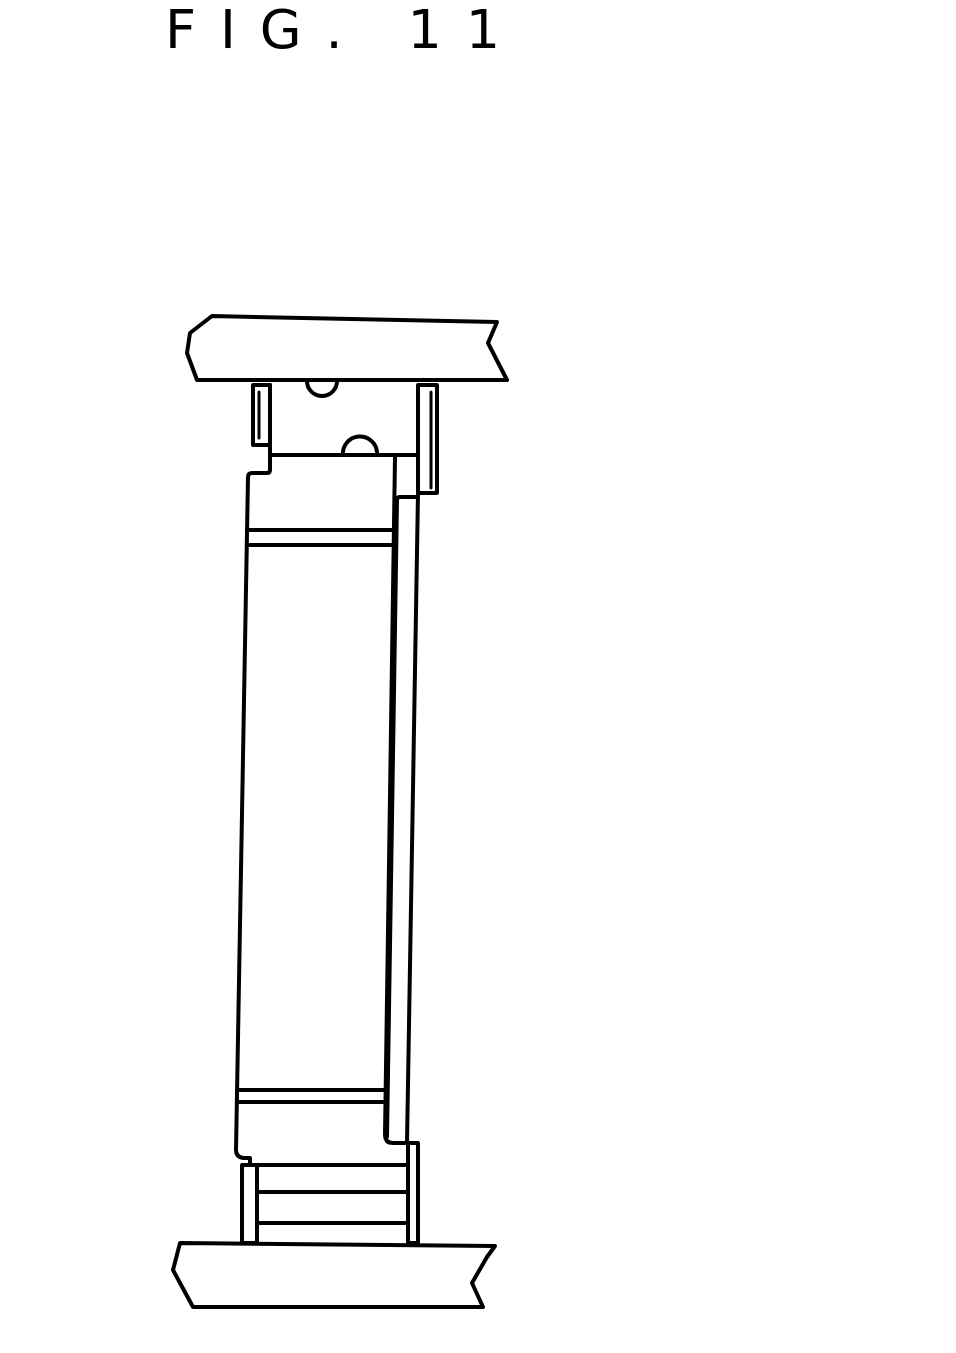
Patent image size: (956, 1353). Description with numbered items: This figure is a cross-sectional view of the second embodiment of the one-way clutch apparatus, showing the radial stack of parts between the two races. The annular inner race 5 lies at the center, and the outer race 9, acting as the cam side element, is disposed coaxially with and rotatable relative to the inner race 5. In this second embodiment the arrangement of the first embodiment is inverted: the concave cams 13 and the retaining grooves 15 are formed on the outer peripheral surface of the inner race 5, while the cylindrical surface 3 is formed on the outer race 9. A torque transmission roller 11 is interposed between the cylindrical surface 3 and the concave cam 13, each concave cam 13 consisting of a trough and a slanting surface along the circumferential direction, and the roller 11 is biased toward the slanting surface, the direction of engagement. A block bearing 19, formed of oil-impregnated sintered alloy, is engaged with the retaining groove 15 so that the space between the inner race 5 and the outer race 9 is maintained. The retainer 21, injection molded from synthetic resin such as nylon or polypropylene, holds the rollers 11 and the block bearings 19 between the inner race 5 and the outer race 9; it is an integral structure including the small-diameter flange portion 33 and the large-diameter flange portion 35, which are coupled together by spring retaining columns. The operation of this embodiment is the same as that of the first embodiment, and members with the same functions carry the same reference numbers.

The cylindrical surface 3 is at (303, 382).
The outer race 9 is at (411, 320).
The small-diameter flange portion 33 is at (252, 420).
The torque transmission roller 11 is at (393, 418).
The large-diameter flange portion 35 is at (442, 462).
The concave cam 13 is at (377, 452).
The inner race 5 is at (246, 523).
The retaining groove 15 is at (305, 1166).
The block bearing 19 is at (422, 1173).
The retainer 21 is at (422, 1213).